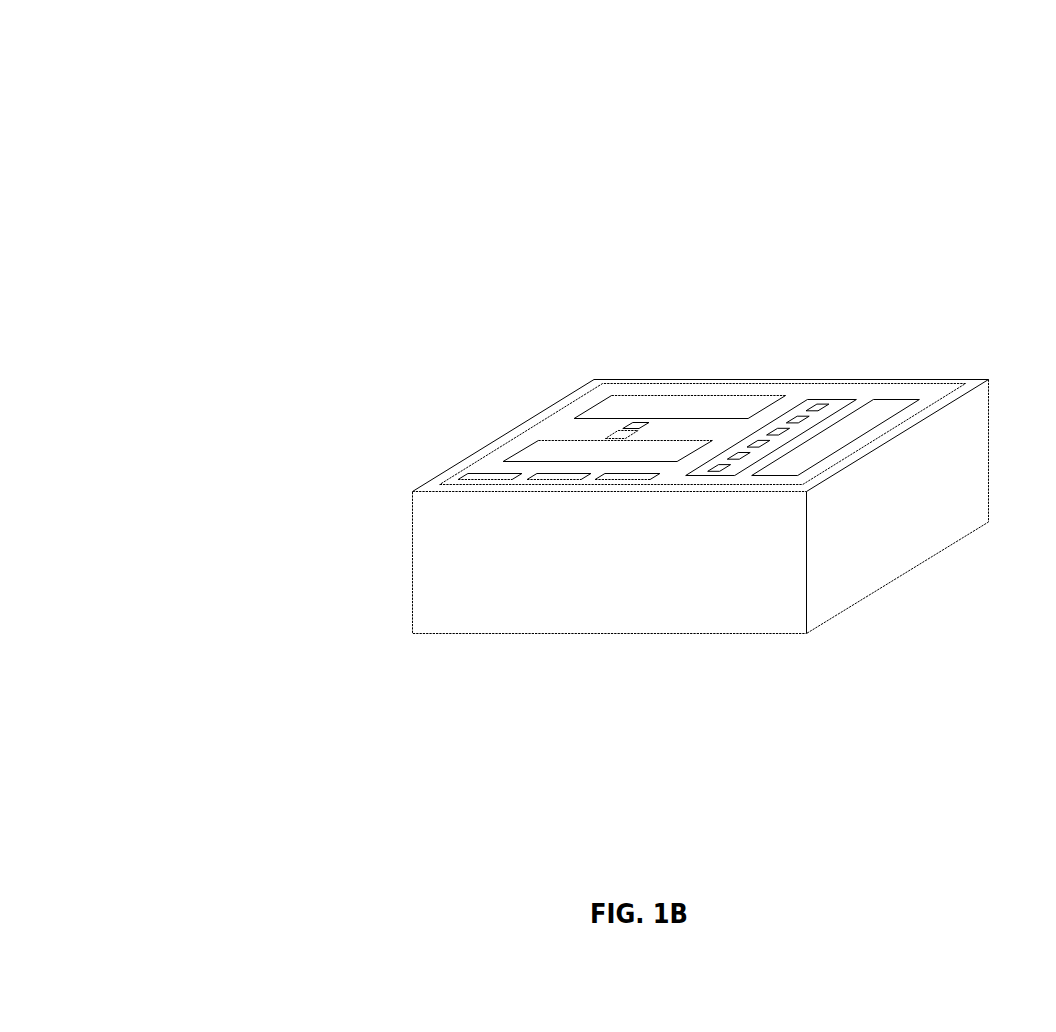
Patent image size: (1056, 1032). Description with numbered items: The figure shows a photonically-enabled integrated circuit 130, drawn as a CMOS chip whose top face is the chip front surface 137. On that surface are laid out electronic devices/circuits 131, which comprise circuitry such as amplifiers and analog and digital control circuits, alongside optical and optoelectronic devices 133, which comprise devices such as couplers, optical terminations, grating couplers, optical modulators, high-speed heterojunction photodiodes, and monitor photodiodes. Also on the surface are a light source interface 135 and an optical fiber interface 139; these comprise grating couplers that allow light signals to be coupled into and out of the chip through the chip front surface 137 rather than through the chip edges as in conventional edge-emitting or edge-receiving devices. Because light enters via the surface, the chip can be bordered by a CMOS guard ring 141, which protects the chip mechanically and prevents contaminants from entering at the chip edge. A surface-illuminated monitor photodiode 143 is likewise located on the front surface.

The photonically-enabled integrated circuit 130 is at (256, 103).
The electronic devices/circuits 131 is at (630, 480).
The optical and optoelectronic devices 133 is at (641, 414).
The light source interface 135 is at (637, 424).
The chip front surface 137 is at (738, 389).
The optical fiber interface 139 is at (832, 398).
The CMOS guard ring 141 is at (972, 381).
The surface-illuminated monitor photodiode 143 is at (616, 434).